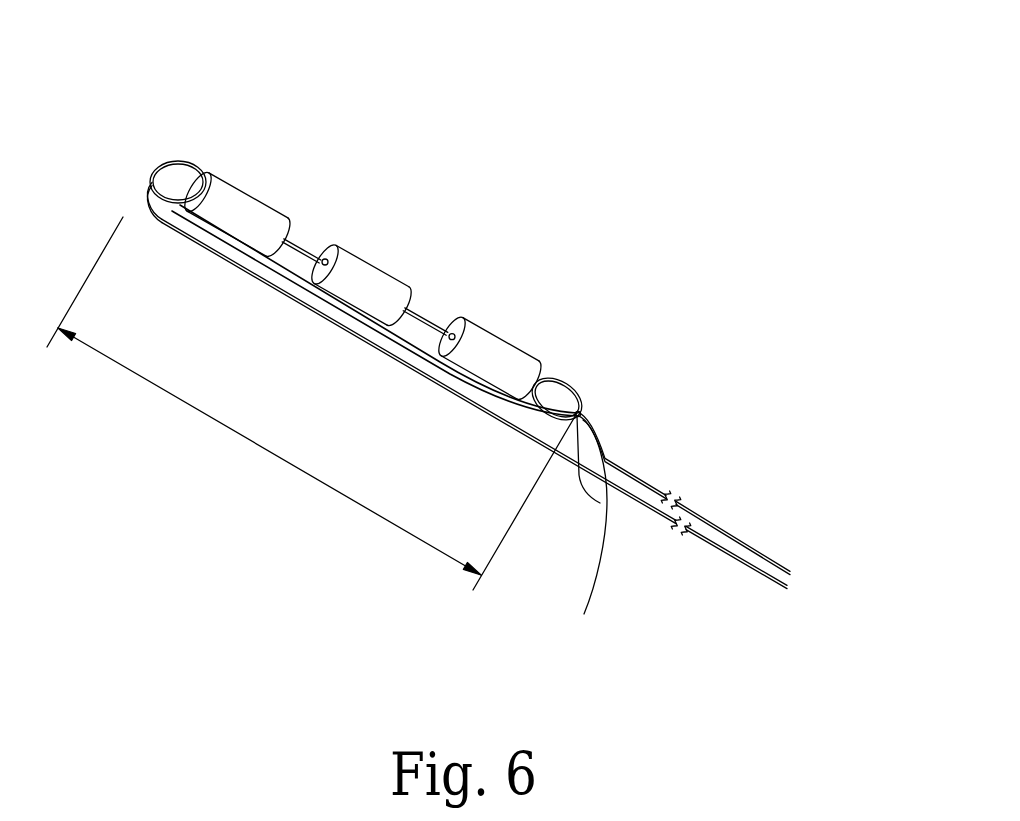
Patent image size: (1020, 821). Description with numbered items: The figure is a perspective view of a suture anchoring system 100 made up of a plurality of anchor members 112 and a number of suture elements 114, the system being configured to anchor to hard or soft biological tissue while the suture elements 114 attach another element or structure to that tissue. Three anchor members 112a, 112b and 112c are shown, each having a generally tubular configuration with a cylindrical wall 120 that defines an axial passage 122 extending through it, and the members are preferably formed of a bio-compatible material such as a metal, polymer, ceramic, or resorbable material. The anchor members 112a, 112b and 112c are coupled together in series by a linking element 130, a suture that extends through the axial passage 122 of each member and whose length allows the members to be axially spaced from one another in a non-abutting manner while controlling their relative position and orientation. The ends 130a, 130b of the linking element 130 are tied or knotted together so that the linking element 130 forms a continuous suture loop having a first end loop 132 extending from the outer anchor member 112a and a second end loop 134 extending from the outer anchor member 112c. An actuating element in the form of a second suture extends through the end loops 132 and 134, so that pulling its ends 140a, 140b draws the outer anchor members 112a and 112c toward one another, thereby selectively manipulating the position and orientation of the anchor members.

The suture anchoring system 100 is at (552, 172).
The anchor members 112 is at (380, 236).
The outer anchor member 112a is at (232, 190).
The anchor member 112b is at (376, 274).
The outer anchor member 112c is at (503, 350).
The suture elements 114 is at (150, 145).
The cylindrical wall 120 is at (334, 246).
The axial passage 122 is at (325, 252).
The linking element 130 is at (453, 309).
The end of the linking element 130a is at (584, 614).
The end of the linking element 130b is at (584, 614).
The first end loop 132 is at (195, 148).
The second end loop 134 is at (570, 368).
The end of the actuating element 140a is at (716, 546).
The end of the actuating element 140b is at (800, 562).